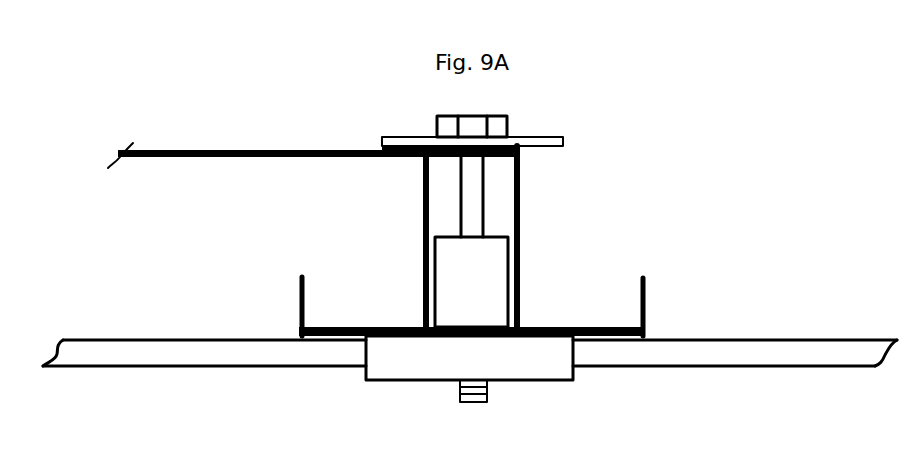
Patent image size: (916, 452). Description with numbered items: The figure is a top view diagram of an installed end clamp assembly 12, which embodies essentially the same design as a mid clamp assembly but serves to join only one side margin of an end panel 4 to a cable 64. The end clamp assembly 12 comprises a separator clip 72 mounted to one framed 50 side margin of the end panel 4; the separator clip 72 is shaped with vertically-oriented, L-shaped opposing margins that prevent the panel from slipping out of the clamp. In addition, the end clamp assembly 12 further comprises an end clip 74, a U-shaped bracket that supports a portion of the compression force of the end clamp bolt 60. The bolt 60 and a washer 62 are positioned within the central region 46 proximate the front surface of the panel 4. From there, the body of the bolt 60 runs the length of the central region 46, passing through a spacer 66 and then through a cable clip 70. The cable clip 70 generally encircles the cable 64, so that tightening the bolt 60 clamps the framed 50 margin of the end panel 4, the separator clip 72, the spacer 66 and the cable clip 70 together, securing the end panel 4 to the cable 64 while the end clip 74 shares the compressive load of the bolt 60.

The end panel 4 is at (240, 245).
The end clamp assembly 12 is at (637, 196).
The central region 46 is at (458, 167).
The frame 50 is at (423, 214).
The bolt 60 is at (508, 118).
The washer 62 is at (384, 139).
The cable 64 is at (232, 368).
The spacer 66 is at (486, 295).
The cable clip 70 is at (486, 367).
The separator clip 72 is at (298, 312).
The end clip 74 is at (521, 238).